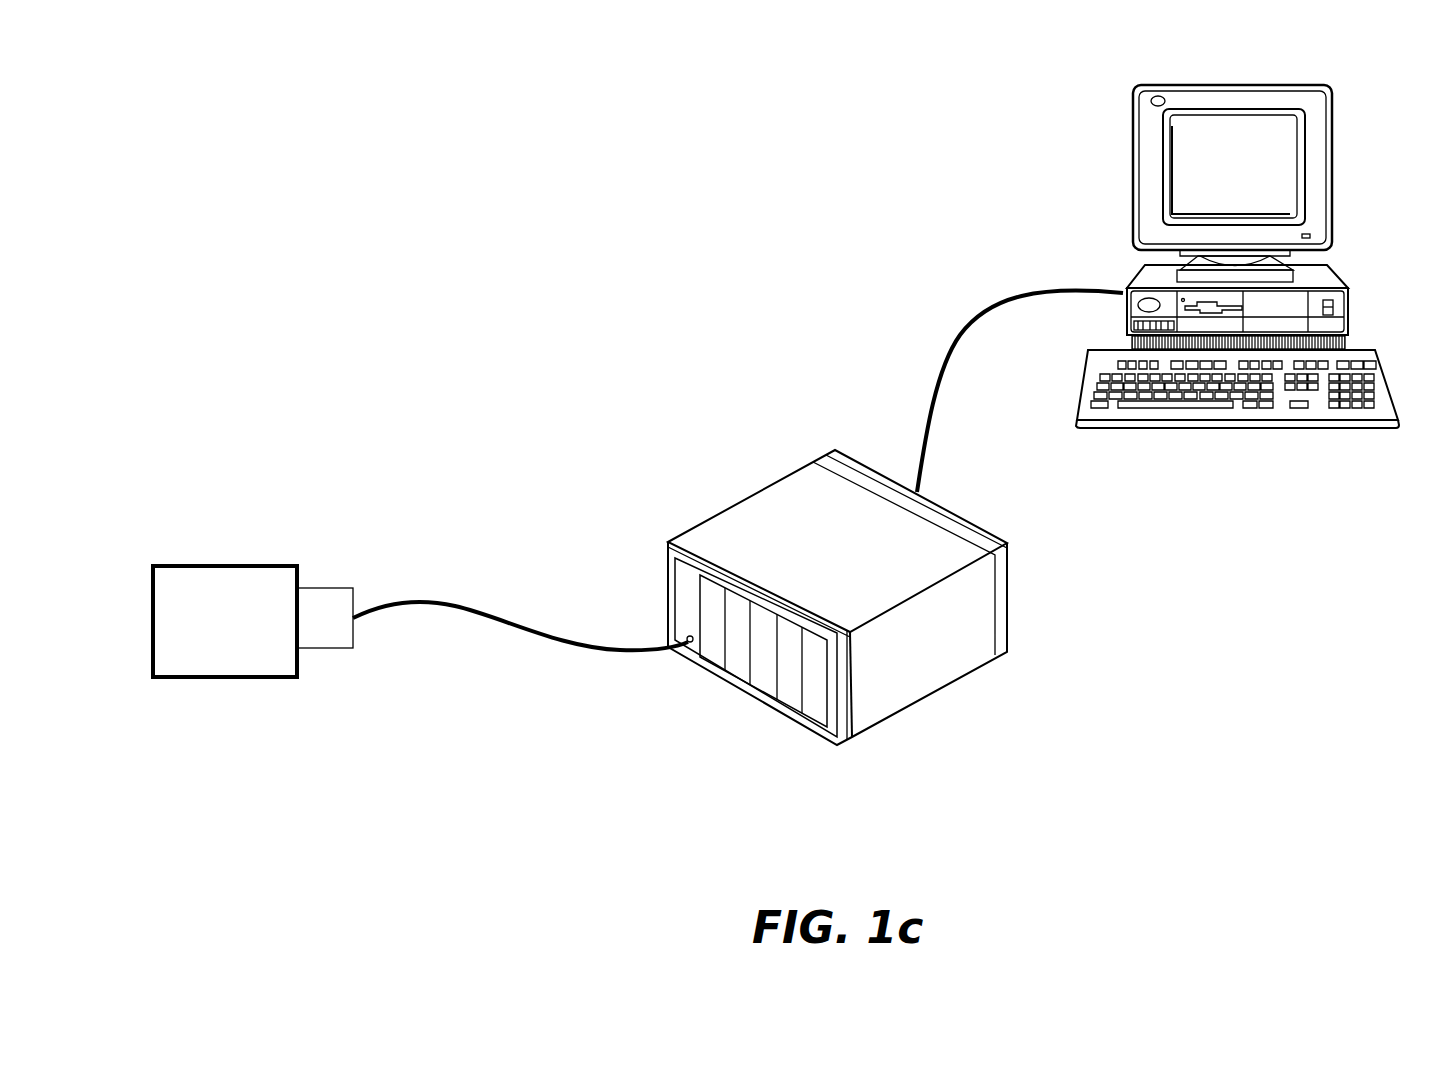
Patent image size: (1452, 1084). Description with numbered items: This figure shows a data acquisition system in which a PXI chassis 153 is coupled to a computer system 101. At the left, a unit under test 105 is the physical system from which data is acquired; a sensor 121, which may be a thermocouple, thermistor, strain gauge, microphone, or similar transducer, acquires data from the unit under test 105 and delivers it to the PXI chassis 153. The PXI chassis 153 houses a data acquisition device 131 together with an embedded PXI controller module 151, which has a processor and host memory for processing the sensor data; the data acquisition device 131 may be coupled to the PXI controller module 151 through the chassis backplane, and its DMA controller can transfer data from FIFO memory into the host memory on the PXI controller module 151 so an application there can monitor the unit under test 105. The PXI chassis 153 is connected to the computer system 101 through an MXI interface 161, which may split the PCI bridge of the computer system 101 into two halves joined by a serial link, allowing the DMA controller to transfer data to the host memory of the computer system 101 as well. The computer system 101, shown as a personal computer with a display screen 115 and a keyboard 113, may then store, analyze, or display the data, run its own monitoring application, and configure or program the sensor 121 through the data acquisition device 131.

The computer system 101 is at (1322, 277).
The unit under test 105 is at (225, 621).
The keyboard 113 is at (1327, 417).
The display screen 115 is at (1328, 138).
The sensor 121 is at (333, 633).
The data acquisition device 131 is at (695, 643).
The PXI controller module 151 is at (712, 645).
The PXI chassis 153 is at (868, 718).
The MXI interface 161 is at (970, 323).